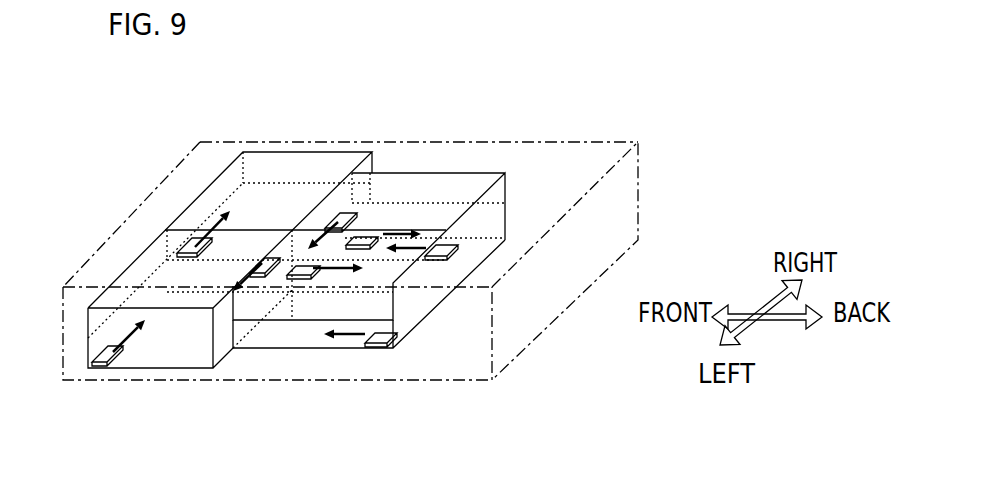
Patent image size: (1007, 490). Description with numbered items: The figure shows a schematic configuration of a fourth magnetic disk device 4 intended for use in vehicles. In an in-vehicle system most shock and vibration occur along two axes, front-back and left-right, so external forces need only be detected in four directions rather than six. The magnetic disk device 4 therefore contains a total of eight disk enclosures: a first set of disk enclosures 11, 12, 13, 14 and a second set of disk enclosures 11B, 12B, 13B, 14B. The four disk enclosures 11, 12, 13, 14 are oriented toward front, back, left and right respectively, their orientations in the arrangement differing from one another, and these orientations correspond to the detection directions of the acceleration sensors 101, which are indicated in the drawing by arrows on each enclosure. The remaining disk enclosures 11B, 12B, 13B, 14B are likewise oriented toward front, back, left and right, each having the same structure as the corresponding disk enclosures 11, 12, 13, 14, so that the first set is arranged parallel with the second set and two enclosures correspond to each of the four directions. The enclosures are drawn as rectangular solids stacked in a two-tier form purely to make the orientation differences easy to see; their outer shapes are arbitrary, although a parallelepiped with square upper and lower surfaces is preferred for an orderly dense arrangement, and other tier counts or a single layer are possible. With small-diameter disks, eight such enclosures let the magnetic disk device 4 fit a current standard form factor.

The magnetic disk device 4 is at (547, 142).
The disk enclosure 11 is at (423, 322).
The disk enclosure 11B is at (505, 190).
The disk enclosure 12 is at (400, 270).
The disk enclosure 12B is at (505, 250).
The disk enclosure 13 is at (183, 370).
The disk enclosure 13B is at (217, 177).
The disk enclosure 14 is at (121, 276).
The disk enclosure 14B is at (227, 198).
The acceleration sensor 101 is at (177, 246).